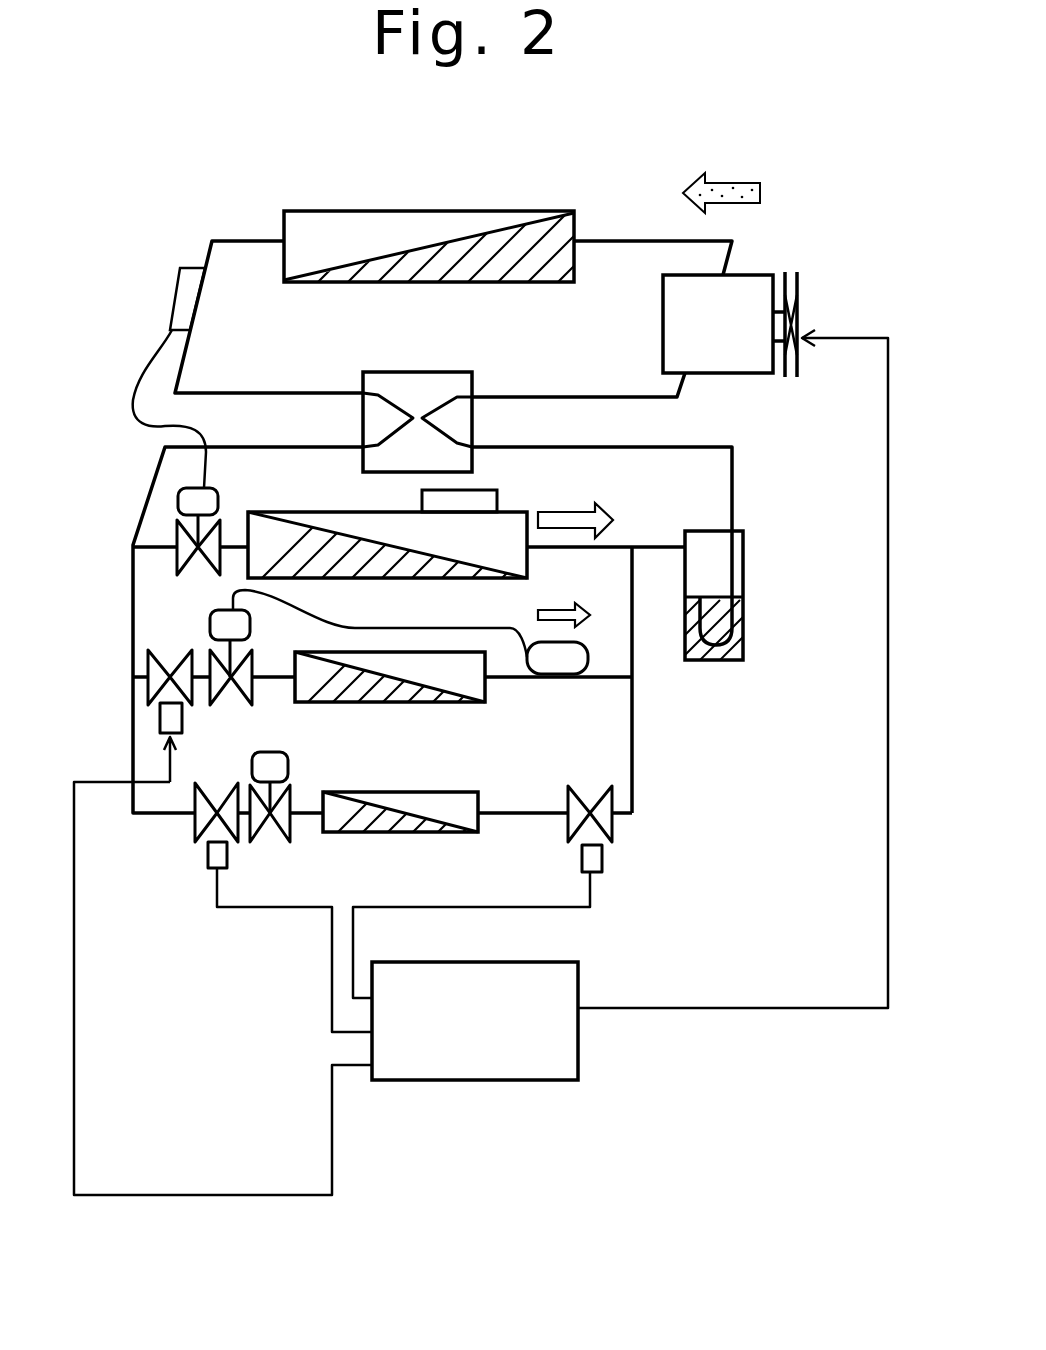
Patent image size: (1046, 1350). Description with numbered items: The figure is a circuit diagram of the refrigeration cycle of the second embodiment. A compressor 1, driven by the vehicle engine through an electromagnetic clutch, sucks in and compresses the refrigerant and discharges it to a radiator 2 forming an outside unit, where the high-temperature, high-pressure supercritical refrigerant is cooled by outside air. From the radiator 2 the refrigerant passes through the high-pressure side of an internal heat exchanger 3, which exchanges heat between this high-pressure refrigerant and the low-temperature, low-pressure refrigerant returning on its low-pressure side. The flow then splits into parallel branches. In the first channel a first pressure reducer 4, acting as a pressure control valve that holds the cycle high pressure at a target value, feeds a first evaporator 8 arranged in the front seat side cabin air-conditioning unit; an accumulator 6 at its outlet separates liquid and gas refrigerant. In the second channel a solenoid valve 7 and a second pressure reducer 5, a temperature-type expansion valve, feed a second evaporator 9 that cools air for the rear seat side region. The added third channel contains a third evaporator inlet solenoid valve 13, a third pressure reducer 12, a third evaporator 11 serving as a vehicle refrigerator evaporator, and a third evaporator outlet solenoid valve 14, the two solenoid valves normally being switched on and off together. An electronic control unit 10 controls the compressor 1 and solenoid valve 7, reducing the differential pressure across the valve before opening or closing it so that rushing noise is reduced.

The compressor 1 is at (743, 278).
The radiator 2 is at (432, 225).
The internal heat exchanger 3 is at (370, 427).
The first pressure reducer 4 is at (173, 528).
The second pressure reducer 5 is at (208, 618).
The accumulator 6 is at (745, 640).
The solenoid valve 7 is at (148, 655).
The first evaporator 8 is at (517, 512).
The second evaporator 9 is at (488, 683).
The electronic control unit 10 is at (578, 1048).
The third evaporator 11 is at (453, 832).
The third pressure reducer 12 is at (288, 757).
The third evaporator inlet solenoid valve 13 is at (213, 853).
The third evaporator outlet solenoid valve 14 is at (602, 855).